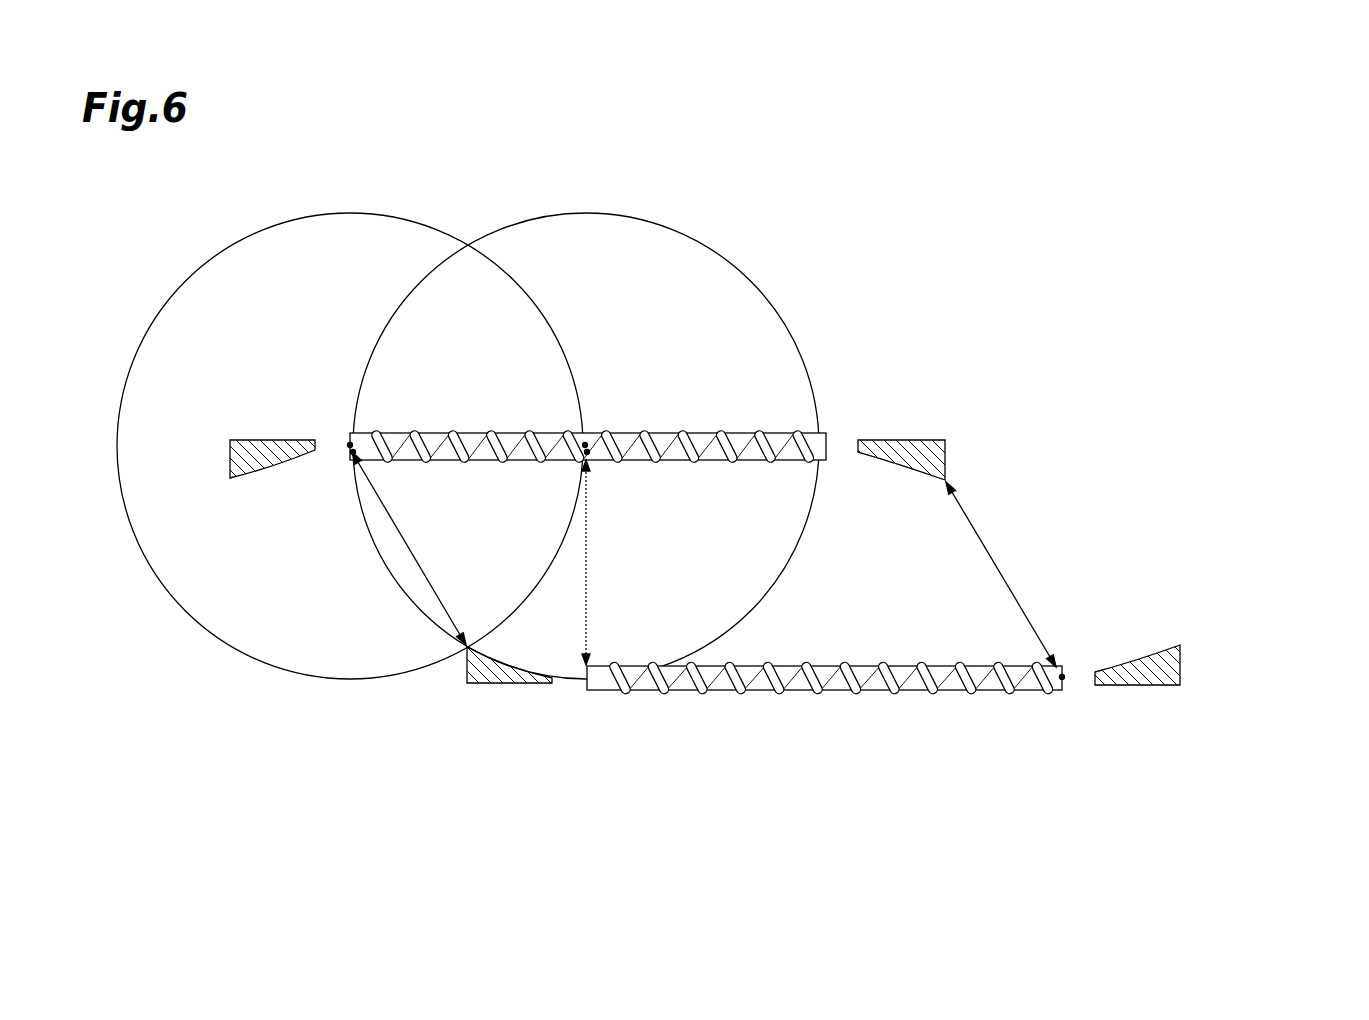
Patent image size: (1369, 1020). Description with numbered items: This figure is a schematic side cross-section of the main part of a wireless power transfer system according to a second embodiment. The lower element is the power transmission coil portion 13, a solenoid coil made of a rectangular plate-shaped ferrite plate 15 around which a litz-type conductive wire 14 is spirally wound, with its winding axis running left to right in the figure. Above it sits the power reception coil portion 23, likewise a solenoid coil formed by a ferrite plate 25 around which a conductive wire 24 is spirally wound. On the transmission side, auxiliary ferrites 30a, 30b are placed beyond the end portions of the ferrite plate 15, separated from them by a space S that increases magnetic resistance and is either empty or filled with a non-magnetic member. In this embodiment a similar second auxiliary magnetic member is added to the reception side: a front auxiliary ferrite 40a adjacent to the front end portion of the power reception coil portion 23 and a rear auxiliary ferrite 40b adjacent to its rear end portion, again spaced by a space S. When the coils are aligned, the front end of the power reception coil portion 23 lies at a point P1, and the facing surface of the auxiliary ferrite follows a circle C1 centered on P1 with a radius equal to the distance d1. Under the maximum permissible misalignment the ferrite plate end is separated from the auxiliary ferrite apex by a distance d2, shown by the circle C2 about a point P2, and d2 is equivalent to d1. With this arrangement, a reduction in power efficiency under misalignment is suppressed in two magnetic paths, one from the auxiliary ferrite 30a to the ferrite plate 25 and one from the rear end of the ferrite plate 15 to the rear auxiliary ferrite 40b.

The power transmission coil portion 13 is at (826, 721).
The conductive wire 14 is at (852, 692).
The ferrite plate 15 is at (790, 692).
The power reception coil portion 23 is at (633, 413).
The conductive wire 24 is at (601, 434).
The ferrite plate 25 is at (709, 434).
The auxiliary ferrite 30a is at (467, 683).
The auxiliary ferrite 30b is at (1182, 665).
The front auxiliary ferrite 40a is at (226, 455).
The rear auxiliary ferrite 40b is at (947, 447).
The circle C1 is at (589, 213).
The circle C2 is at (352, 213).
The point P1 is at (588, 455).
The second point P2 is at (350, 455).
The distance d1 is at (600, 562).
The distance d2 is at (704, 559).
The space S is at (333, 440).